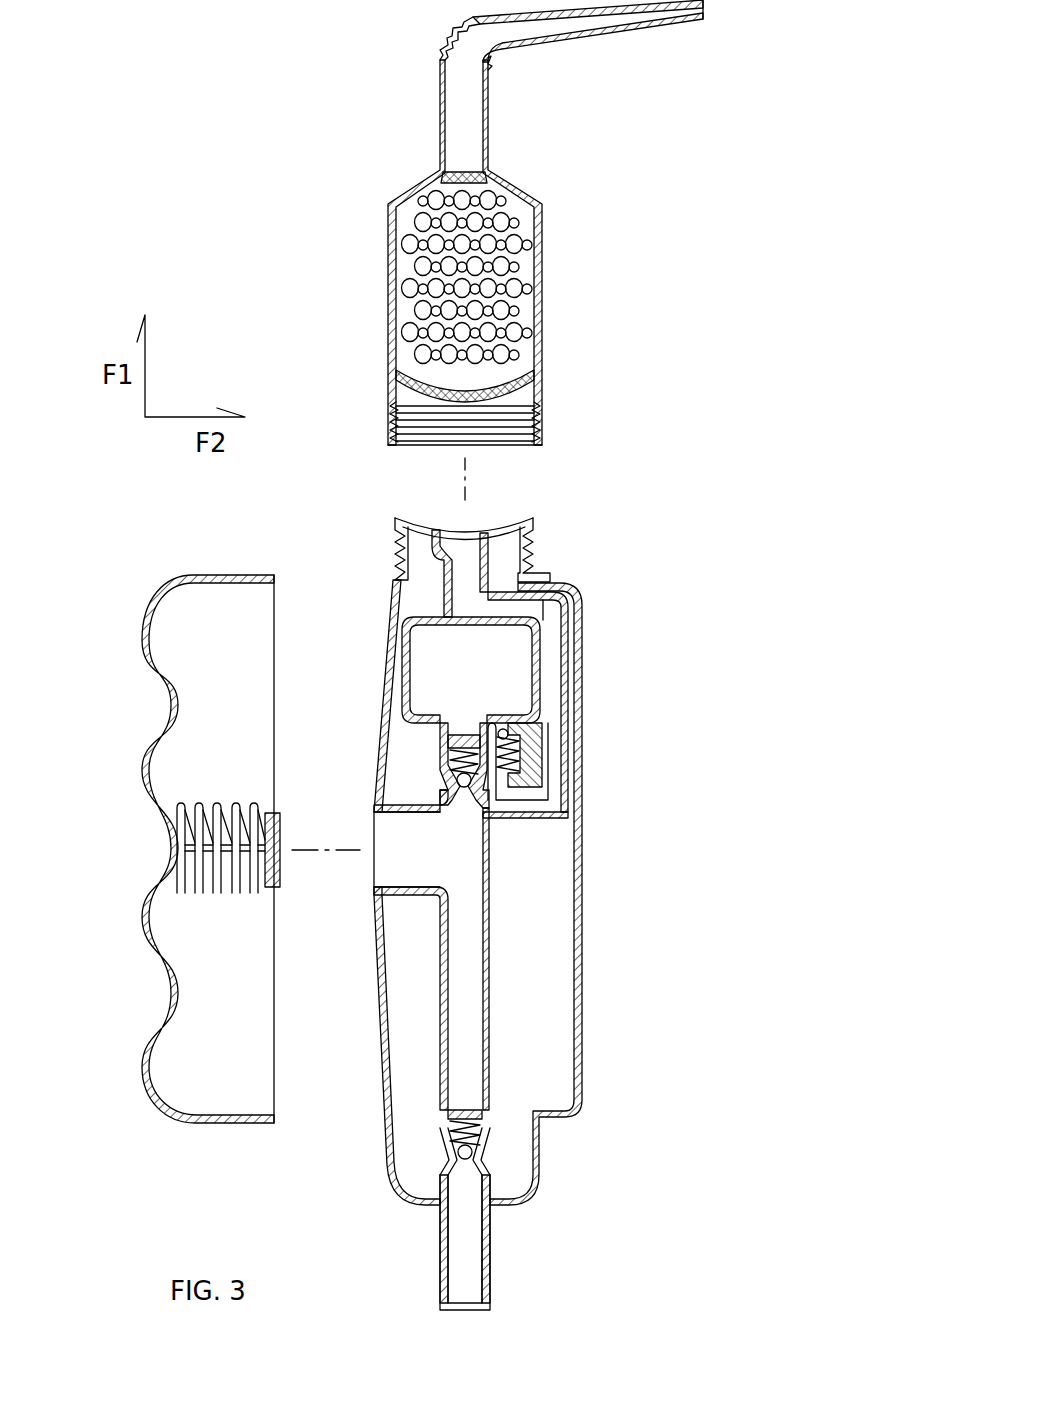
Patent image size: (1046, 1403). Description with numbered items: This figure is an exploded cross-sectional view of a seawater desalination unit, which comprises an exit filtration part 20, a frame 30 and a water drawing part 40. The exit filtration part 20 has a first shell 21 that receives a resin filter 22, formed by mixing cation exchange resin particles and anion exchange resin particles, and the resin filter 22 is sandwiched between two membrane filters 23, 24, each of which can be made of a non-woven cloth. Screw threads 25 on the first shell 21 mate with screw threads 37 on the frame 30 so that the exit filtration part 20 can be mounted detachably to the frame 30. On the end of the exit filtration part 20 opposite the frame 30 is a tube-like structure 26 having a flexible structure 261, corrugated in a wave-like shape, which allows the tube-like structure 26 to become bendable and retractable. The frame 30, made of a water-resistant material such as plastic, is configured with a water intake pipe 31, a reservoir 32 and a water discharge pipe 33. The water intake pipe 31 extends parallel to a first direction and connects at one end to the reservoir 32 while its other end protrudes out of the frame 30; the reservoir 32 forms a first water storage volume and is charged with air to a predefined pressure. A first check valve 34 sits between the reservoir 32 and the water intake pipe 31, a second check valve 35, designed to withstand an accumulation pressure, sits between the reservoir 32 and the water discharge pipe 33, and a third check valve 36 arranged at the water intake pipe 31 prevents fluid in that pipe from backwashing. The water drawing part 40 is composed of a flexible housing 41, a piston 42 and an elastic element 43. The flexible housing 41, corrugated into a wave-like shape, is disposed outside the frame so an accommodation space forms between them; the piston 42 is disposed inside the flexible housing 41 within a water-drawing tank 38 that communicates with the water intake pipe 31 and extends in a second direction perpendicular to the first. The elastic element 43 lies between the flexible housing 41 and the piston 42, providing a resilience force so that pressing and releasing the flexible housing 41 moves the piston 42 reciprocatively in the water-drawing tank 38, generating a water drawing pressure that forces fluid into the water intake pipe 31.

The exit filtration part 20 is at (378, 108).
The first shell 21 is at (543, 262).
The resin filter 22 is at (503, 323).
The membrane filter 23 is at (527, 378).
The membrane filter 24 is at (423, 177).
The screw threads 25 is at (488, 427).
The tube-like structure 26 is at (596, 40).
The flexible structure 261 is at (453, 45).
The frame 30 is at (598, 908).
The water intake pipe 31 is at (470, 998).
The reservoir 32 is at (425, 665).
The water discharge pipe 33 is at (555, 672).
The first check valve 34 is at (455, 775).
The second check valve 35 is at (515, 743).
The third check valve 36 is at (460, 1125).
The screw threads 37 is at (395, 548).
The water-drawing tank 38 is at (418, 850).
The water drawing part 40 is at (101, 953).
The flexible housing 41 is at (145, 772).
The piston 42 is at (280, 868).
The elastic element 43 is at (213, 805).